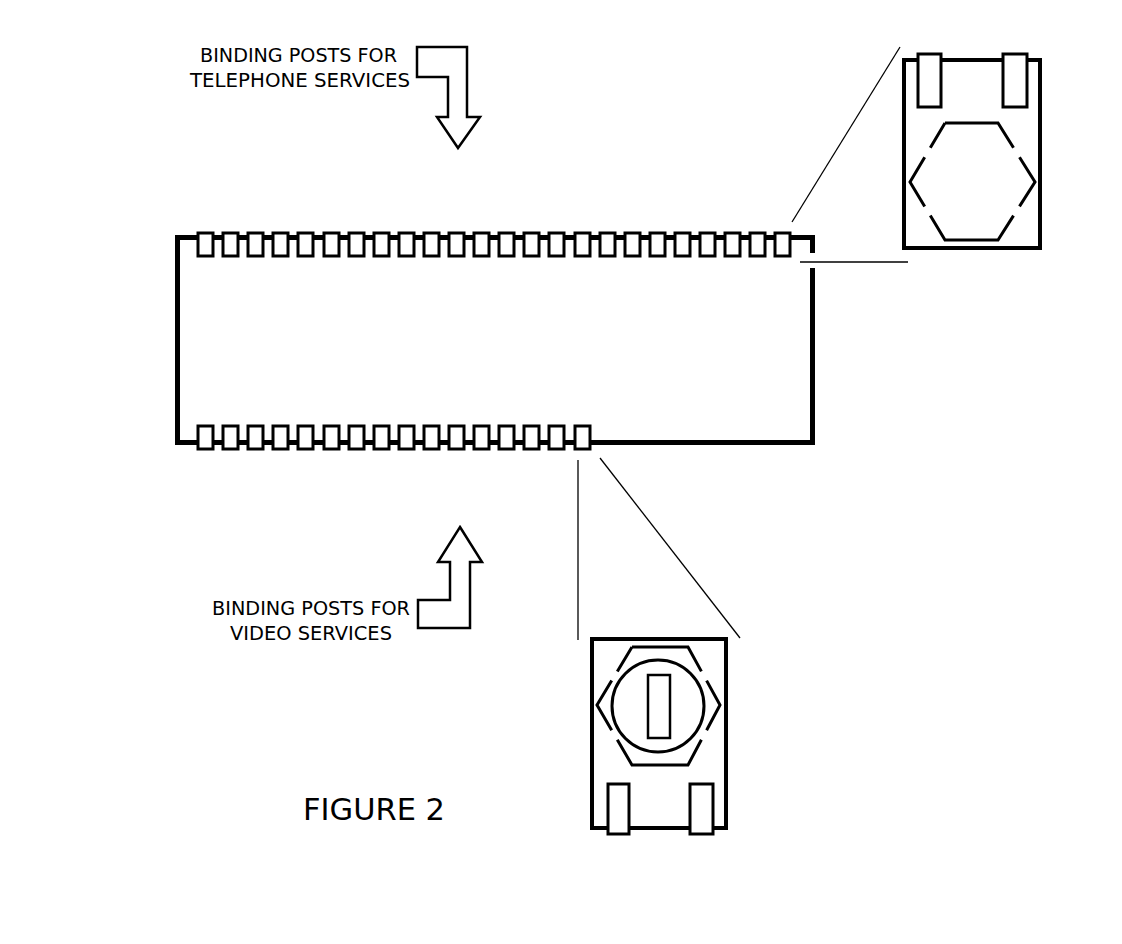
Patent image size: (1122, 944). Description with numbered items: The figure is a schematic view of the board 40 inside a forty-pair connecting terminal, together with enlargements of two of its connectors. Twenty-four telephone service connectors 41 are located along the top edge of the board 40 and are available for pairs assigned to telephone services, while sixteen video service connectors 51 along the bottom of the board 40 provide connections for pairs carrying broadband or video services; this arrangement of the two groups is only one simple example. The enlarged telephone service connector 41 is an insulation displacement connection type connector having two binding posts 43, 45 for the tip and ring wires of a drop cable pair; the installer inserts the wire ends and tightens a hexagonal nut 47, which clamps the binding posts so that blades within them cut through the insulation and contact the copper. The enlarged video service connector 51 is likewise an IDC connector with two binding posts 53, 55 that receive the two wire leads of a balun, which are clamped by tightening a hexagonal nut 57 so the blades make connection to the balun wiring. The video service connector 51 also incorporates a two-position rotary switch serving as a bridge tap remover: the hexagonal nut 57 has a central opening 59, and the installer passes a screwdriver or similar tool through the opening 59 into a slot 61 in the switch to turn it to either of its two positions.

The board 40 is at (822, 400).
The telephone service connector 41 is at (1050, 222).
The binding post 43 is at (929, 47).
The binding post 45 is at (1015, 47).
The hexagonal nut 47 is at (980, 115).
The video service connector 51 is at (735, 762).
The binding post 53 is at (617, 846).
The binding post 55 is at (702, 846).
The hexagonal nut 57 is at (667, 778).
The central opening 59 is at (689, 720).
The slot 61 is at (643, 720).